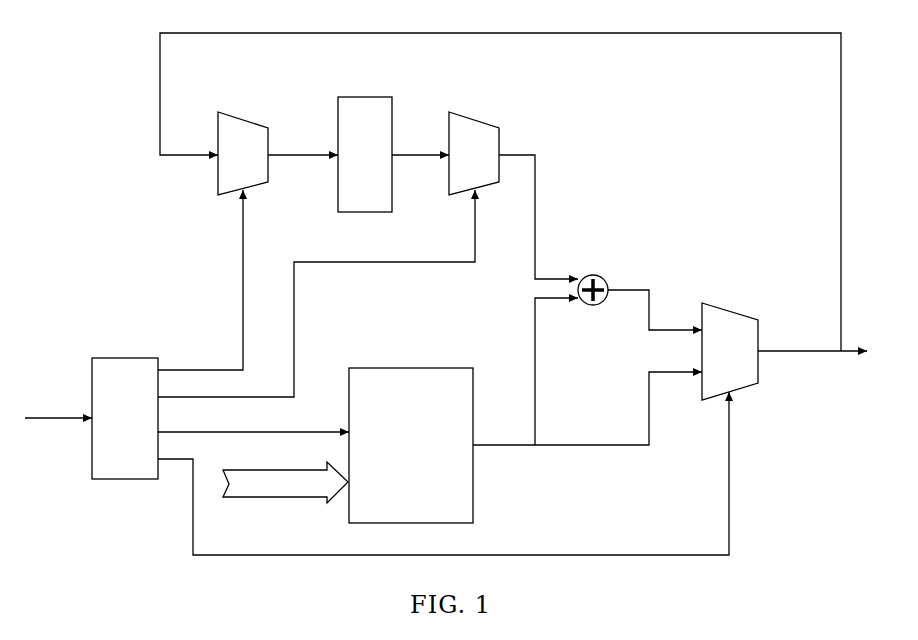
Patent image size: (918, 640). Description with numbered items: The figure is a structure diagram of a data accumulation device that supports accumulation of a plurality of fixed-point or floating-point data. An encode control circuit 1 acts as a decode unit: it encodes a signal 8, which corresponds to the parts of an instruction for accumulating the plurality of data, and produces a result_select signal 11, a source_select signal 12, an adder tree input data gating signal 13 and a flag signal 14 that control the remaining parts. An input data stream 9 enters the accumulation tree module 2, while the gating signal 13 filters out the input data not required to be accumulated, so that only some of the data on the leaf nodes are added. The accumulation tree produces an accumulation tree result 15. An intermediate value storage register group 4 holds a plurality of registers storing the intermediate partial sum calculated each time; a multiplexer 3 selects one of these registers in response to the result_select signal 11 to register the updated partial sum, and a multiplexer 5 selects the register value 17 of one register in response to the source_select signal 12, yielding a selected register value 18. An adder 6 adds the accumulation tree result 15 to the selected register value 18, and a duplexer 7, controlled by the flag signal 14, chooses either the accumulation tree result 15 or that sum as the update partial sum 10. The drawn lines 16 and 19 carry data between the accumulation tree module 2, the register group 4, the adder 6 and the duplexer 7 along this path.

The encode control circuit 1 is at (106, 358).
The accumulation tree module 2 is at (431, 368).
The multiplexer 3 is at (243, 120).
The intermediate value storage register group 4 is at (366, 97).
The multiplexer 5 is at (490, 125).
The adder 6 is at (598, 275).
The duplexer 7 is at (731, 310).
The signal 8 is at (42, 418).
The input data stream 9 is at (256, 470).
The update partial sum 10 is at (786, 351).
The result_select signal 11 is at (184, 370).
The source_select signal 12 is at (314, 262).
The adder tree input data gating signal 13 is at (286, 432).
The flag signal 14 is at (568, 555).
The accumulation tree result 15 is at (492, 445).
The compressed nitrogen line 16 is at (290, 155).
The register value 17 is at (406, 155).
The selected register value 18 is at (535, 172).
The mixed gas line 19 is at (650, 290).